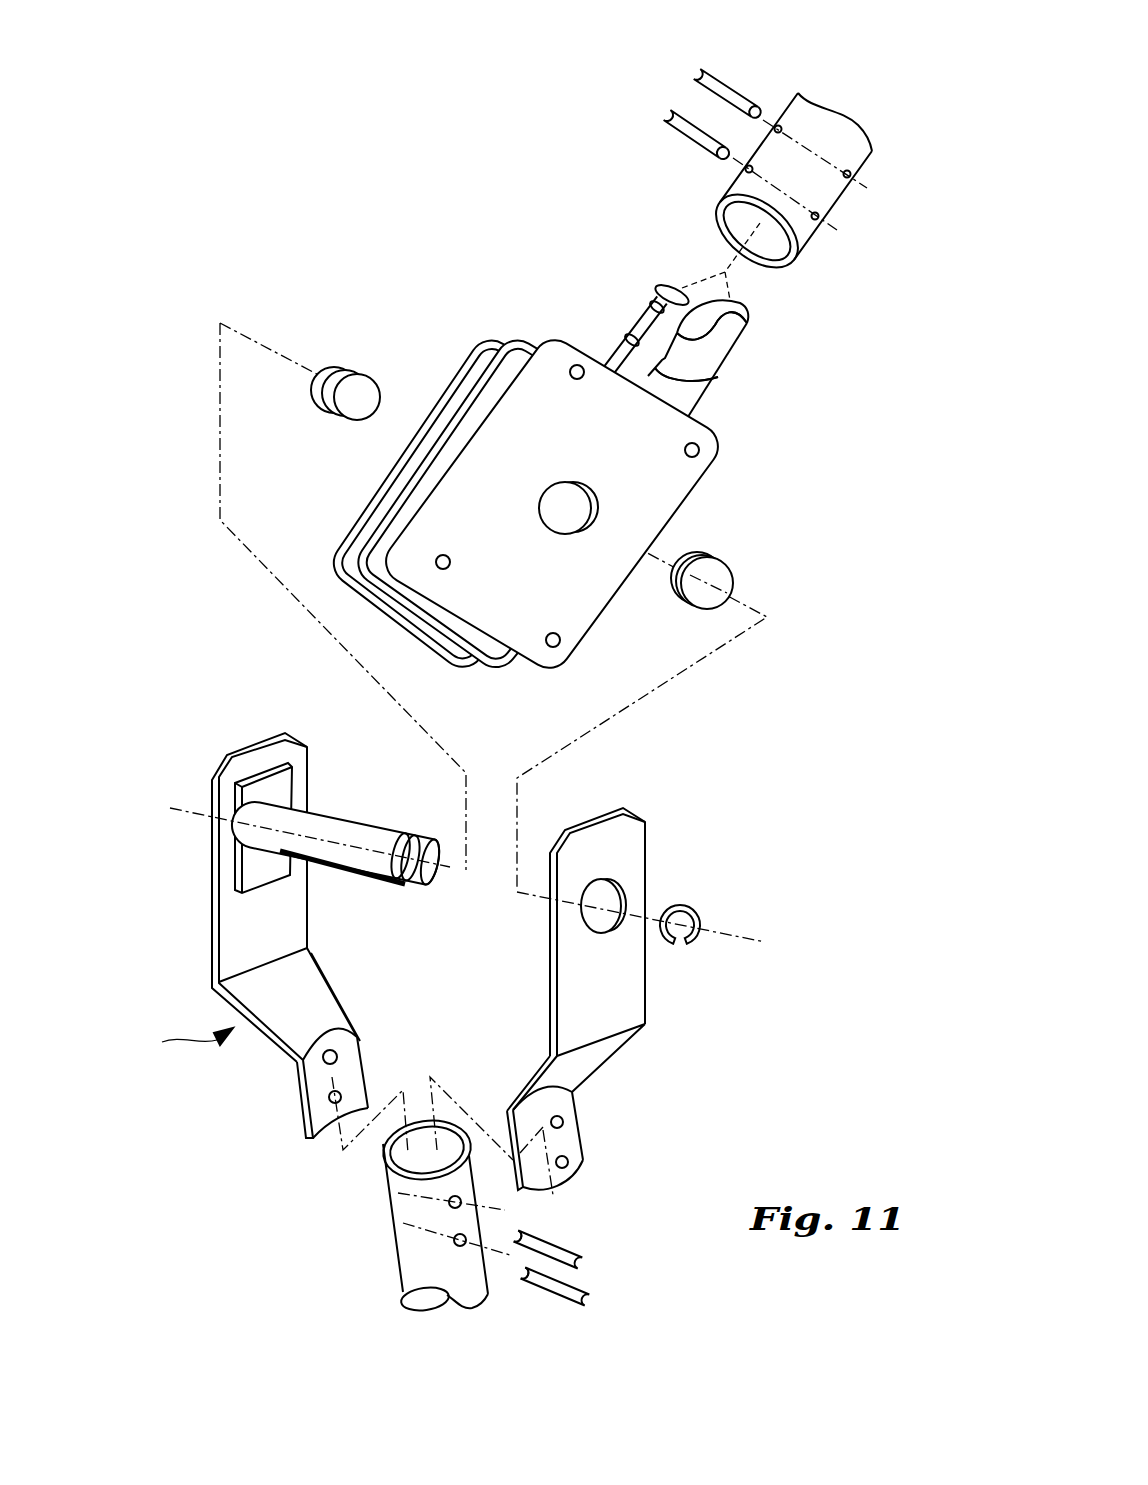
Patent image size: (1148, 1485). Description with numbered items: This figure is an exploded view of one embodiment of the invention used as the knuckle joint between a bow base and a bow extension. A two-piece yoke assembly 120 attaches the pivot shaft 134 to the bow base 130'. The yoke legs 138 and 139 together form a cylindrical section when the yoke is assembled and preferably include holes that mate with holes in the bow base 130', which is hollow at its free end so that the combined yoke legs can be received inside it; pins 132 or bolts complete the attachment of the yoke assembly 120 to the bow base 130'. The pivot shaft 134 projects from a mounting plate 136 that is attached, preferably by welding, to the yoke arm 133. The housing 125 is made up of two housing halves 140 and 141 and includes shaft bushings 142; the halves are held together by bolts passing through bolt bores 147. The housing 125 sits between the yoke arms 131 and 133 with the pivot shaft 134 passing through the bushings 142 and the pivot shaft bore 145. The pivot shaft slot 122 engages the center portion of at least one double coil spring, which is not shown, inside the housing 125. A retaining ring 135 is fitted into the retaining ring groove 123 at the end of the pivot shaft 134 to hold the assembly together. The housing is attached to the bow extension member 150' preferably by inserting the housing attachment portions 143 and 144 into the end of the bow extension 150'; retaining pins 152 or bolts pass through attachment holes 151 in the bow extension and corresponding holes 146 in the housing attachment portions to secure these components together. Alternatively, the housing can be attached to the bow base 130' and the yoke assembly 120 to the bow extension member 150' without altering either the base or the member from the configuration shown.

The yoke assembly 120 is at (176, 1049).
The pivot shaft slot 122 is at (336, 866).
The retaining ring groove 123 is at (395, 828).
The housing 125 is at (513, 335).
The bow base 130' is at (405, 1195).
The yoke arm 131 is at (646, 985).
The pins 132 is at (567, 1252).
The yoke arm 133 is at (212, 923).
The pivot shaft 134 is at (335, 816).
The retaining ring 135 is at (688, 902).
The mounting plate 136 is at (264, 770).
The yoke leg 138 is at (577, 1117).
The yoke leg 139 is at (298, 1095).
The housing half 140 is at (723, 454).
The housing half 141 is at (442, 398).
The shaft bushings 142 is at (352, 373).
The housing attachment portion 143 is at (730, 357).
The housing attachment portion 144 is at (670, 290).
The pivot shaft bore 145 is at (547, 526).
The holes 146 is at (655, 300).
The bolt bores 147 is at (577, 380).
The bow extension member 150' is at (818, 187).
The attachment holes 151 is at (778, 125).
The retaining pins 152 is at (700, 68).